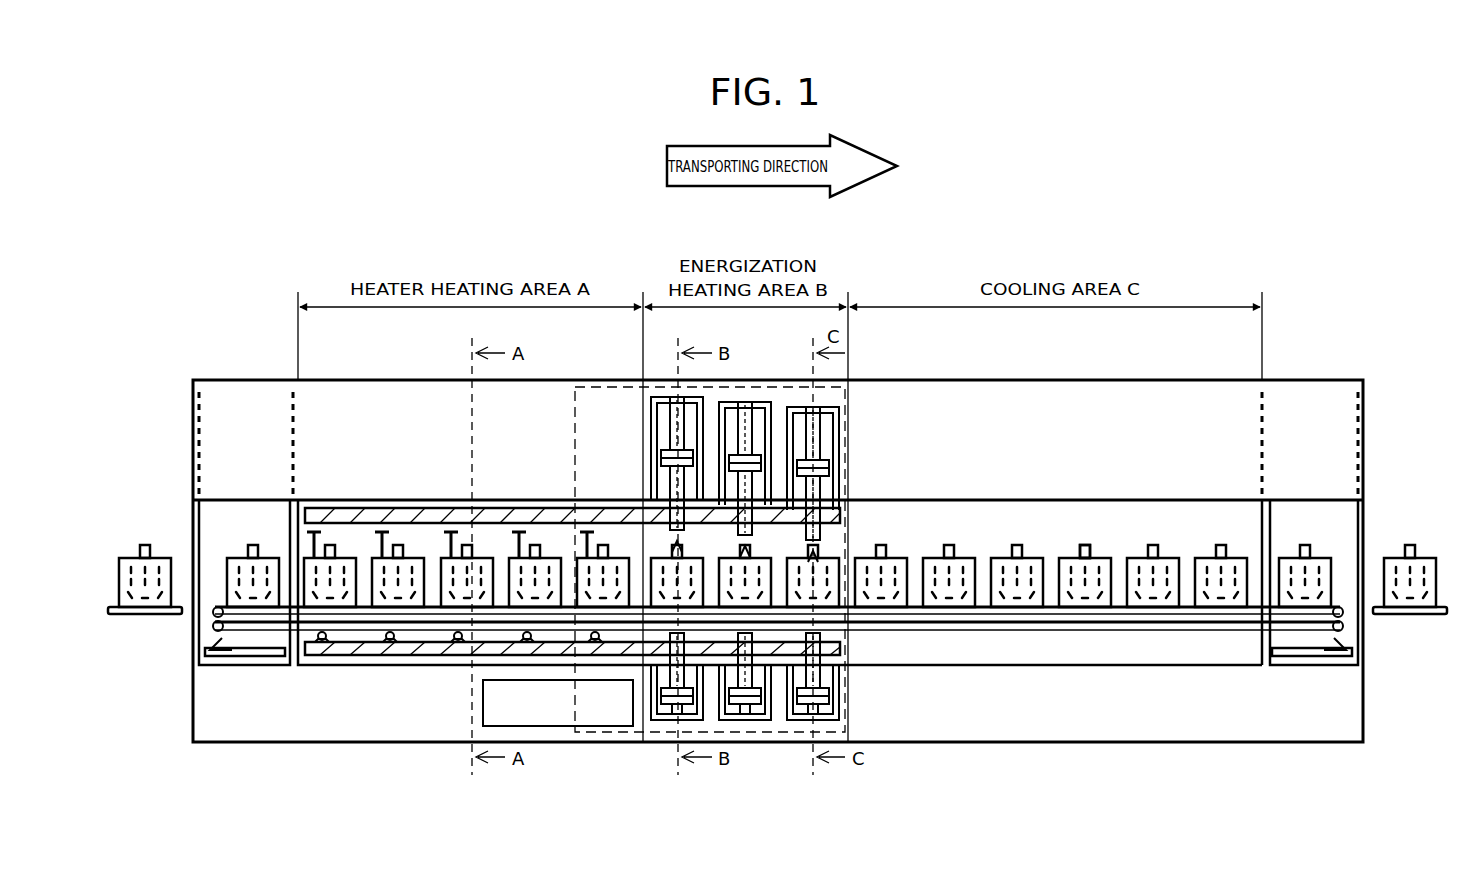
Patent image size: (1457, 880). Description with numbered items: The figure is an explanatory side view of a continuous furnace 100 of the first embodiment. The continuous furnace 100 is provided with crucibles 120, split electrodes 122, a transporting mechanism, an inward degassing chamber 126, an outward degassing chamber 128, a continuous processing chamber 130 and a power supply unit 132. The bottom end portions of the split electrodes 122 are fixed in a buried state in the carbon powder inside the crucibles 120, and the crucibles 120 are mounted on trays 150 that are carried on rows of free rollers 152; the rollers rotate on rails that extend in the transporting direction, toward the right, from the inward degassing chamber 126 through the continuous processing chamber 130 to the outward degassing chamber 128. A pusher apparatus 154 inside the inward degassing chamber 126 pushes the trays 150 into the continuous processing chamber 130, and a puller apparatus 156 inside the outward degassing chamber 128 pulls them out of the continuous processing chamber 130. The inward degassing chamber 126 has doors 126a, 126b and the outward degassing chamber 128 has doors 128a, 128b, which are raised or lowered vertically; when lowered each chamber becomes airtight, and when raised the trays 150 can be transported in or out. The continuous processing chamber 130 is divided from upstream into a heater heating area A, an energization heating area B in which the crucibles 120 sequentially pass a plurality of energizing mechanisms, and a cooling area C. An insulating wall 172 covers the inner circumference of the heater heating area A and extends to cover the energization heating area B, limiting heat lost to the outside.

The continuous furnace 100 is at (186, 326).
The crucible 120 is at (1106, 560).
The split electrode 122 is at (1083, 548).
The inward degassing chamber 126 is at (258, 505).
The door 126a is at (192, 478).
The door 126b is at (292, 482).
The outward degassing chamber 128 is at (1312, 505).
The door 128a is at (1364, 478).
The door 128b is at (1265, 488).
The continuous processing chamber 130 is at (945, 505).
The power supply unit 132 is at (548, 726).
The tray 150 is at (1015, 632).
The free roller 152 is at (1135, 632).
The pusher apparatus 154 is at (263, 655).
The puller apparatus 156 is at (1297, 660).
The insulating wall 172 is at (342, 508).